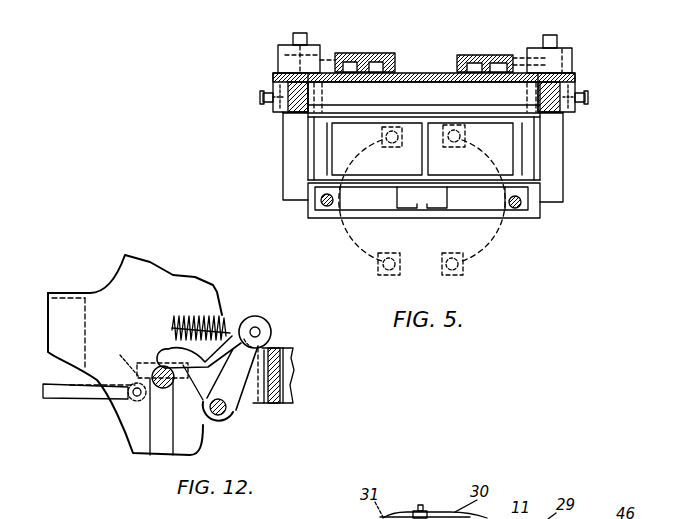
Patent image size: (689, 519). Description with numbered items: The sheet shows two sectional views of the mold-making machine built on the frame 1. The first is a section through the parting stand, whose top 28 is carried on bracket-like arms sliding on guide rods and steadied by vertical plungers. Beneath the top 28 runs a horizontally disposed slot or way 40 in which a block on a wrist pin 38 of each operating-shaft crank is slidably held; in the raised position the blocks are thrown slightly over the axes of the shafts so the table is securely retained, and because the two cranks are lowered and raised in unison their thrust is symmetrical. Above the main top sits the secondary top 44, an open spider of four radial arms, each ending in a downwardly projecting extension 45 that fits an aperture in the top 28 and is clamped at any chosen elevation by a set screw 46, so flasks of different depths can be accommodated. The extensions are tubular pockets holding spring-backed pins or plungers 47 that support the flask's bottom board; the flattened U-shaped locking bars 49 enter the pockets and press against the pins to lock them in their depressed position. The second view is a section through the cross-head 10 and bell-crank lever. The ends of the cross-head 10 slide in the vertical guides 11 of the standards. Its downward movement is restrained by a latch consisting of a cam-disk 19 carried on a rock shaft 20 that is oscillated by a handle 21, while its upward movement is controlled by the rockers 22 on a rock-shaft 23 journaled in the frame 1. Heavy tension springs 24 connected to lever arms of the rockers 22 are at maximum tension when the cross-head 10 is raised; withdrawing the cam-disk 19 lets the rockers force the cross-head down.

In FIG. 12, the frame 1 is at (288, 380).
In FIG. 12, the cross-head 10 is at (140, 362).
In FIG. 12, the vertical guides 11 is at (155, 450).
In FIG. 12, the cam-disk 19 is at (118, 363).
In FIG. 12, the rock shaft 20 is at (132, 396).
In FIG. 12, the handle 21 is at (60, 384).
In FIG. 12, the rockers 22 is at (240, 378).
In FIG. 12, the rock-shaft 23 is at (226, 411).
In FIG. 12, the tension springs 24 is at (200, 314).
In FIG. 5, the parting stand top 28 is at (417, 121).
In FIG. 5, the wrist pin 38 is at (325, 206).
In FIG. 5, the slot or way 40 is at (364, 211).
In FIG. 5, the secondary top 44 is at (460, 54).
In FIG. 5, the downwardly projecting extension 45 is at (290, 177).
In FIG. 5, the set screws 46 is at (262, 98).
In FIG. 5, the pins or plungers 47 is at (295, 43).
In FIG. 5, the locking bars 49 is at (363, 64).